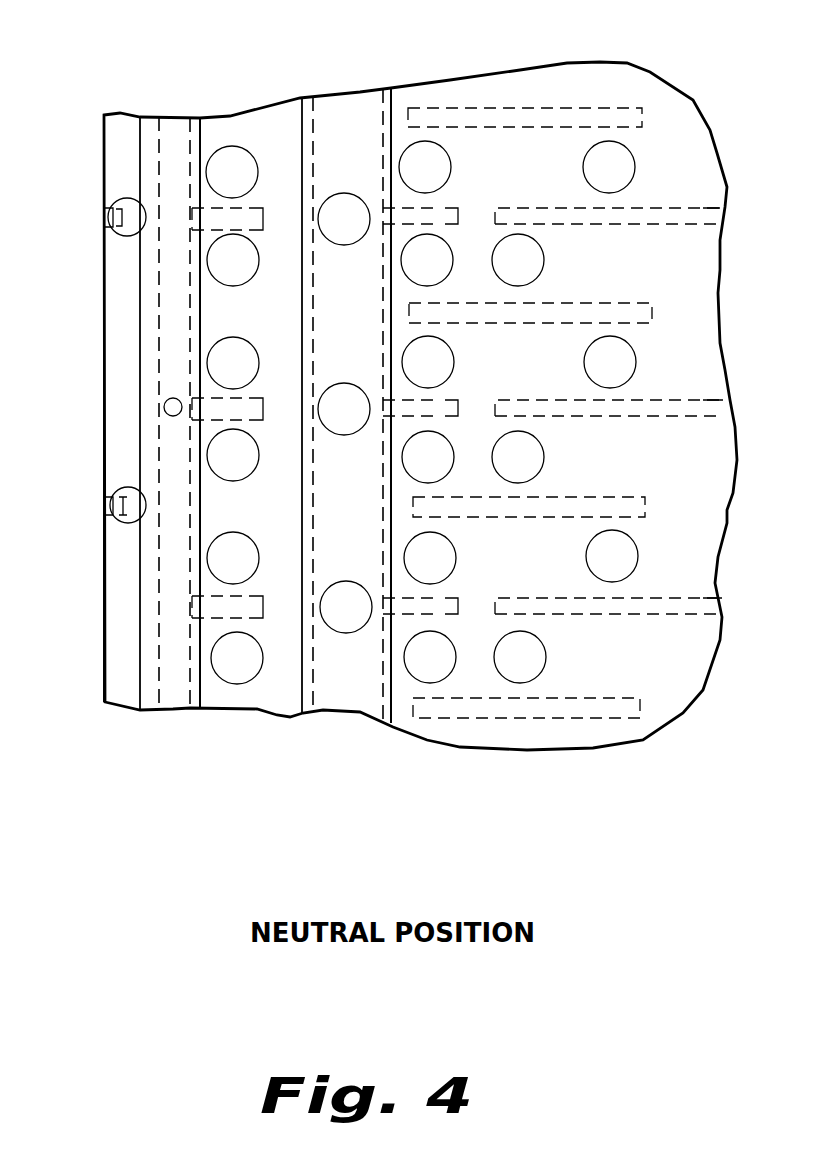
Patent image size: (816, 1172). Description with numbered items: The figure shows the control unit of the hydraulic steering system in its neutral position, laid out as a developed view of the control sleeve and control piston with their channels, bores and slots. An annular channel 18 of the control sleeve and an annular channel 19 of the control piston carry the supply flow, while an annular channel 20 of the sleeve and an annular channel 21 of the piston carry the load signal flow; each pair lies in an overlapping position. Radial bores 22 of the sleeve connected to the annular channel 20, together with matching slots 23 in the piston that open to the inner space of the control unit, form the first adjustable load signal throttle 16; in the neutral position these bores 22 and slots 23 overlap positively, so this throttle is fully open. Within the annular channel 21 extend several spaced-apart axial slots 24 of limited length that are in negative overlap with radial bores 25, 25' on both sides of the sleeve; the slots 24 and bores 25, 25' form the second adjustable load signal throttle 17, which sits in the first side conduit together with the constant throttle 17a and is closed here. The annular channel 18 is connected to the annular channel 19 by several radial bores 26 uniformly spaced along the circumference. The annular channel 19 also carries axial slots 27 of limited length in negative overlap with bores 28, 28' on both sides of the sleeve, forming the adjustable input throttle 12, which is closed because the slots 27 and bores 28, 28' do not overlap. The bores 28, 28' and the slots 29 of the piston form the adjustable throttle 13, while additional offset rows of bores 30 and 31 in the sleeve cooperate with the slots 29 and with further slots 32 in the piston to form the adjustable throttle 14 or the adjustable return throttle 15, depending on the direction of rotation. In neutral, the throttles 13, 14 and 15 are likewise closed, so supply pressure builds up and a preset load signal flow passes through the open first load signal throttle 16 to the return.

The adjustable input throttle 12 is at (419, 768).
The adjustable throttle 13 is at (419, 768).
The adjustable throttle 14 is at (514, 768).
The adjustable return throttle 15 is at (514, 768).
The first adjustable load signal throttle 16 is at (118, 768).
The second adjustable load signal throttle 17 is at (228, 766).
The constant throttle 17a is at (164, 406).
The annular channel 18 is at (309, 100).
The annular channel 19 is at (360, 87).
The annular channel 20 is at (150, 118).
The annular channel 21 is at (176, 120).
The radial bores 22 is at (122, 200).
The slots 23 is at (110, 228).
The axial slots 24 is at (253, 210).
The radial bores 25 is at (232, 365).
The radial bores 25' is at (235, 459).
The radial bores 26 is at (345, 413).
The axial slots 27 is at (444, 211).
The bores 28 is at (427, 362).
The bores 28' is at (428, 458).
The slots 29 is at (587, 117).
The bores 30 is at (519, 458).
The bores 31 is at (610, 361).
The slots 32 is at (704, 212).